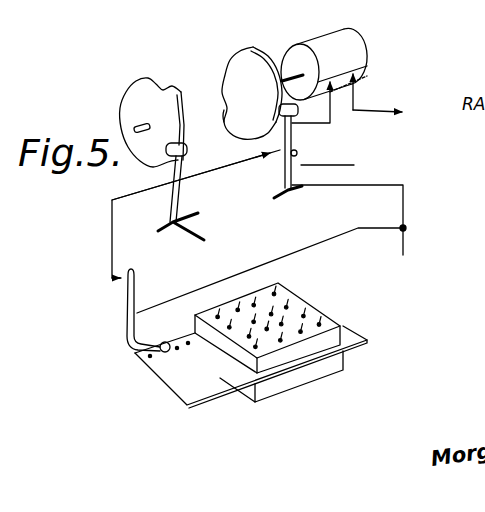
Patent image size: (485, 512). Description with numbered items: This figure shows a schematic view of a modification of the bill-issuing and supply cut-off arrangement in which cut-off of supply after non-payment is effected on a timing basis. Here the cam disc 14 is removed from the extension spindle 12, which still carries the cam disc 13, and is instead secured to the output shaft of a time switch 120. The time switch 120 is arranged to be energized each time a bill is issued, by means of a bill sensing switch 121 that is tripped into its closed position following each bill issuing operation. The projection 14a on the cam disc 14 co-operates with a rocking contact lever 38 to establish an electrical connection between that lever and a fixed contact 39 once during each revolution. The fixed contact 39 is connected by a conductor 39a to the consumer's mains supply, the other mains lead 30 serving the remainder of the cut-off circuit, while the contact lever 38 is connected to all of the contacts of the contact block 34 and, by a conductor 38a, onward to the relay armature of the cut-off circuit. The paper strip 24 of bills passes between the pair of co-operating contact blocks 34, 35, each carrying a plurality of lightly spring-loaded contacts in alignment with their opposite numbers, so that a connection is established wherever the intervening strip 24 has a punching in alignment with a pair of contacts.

The extension spindle 12 is at (139, 124).
The cam disc 13 is at (150, 91).
The cam disc 14 is at (262, 48).
The projection 14a is at (229, 122).
The time switch 120 is at (330, 35).
The consumer's mains lead 30 is at (404, 88).
The rocking contact lever 38 is at (305, 162).
The conductor 38a is at (354, 165).
The fixed contact 39 is at (284, 176).
The conductor 39a is at (403, 185).
The bill sensing switch 121 is at (139, 286).
The strip 24 is at (163, 367).
The contact block 34 is at (297, 305).
The contact block 35 is at (320, 372).